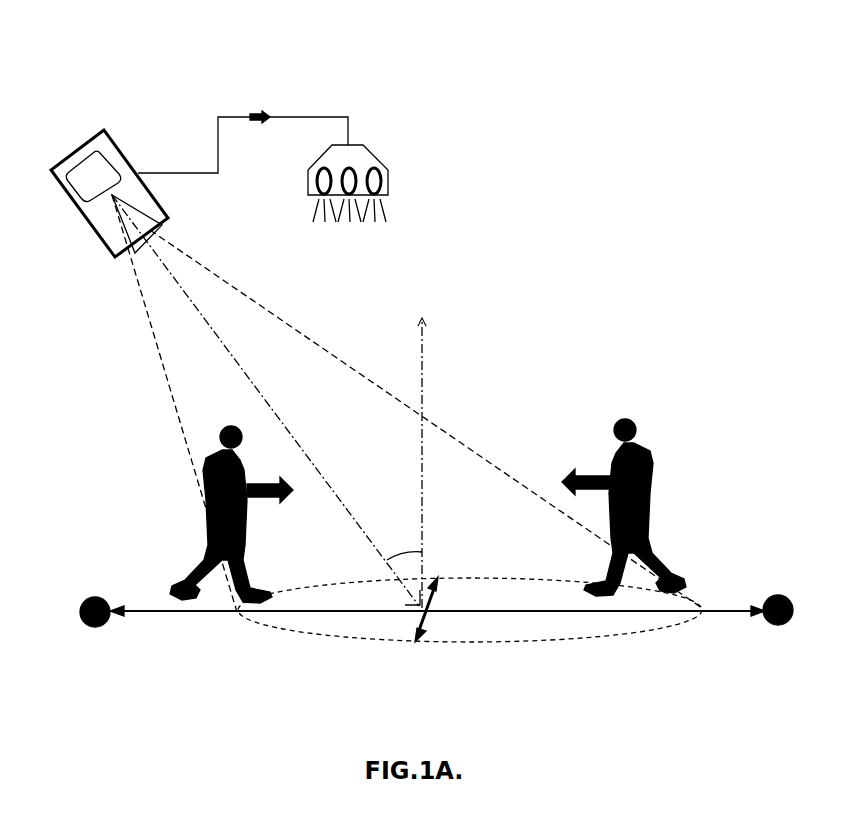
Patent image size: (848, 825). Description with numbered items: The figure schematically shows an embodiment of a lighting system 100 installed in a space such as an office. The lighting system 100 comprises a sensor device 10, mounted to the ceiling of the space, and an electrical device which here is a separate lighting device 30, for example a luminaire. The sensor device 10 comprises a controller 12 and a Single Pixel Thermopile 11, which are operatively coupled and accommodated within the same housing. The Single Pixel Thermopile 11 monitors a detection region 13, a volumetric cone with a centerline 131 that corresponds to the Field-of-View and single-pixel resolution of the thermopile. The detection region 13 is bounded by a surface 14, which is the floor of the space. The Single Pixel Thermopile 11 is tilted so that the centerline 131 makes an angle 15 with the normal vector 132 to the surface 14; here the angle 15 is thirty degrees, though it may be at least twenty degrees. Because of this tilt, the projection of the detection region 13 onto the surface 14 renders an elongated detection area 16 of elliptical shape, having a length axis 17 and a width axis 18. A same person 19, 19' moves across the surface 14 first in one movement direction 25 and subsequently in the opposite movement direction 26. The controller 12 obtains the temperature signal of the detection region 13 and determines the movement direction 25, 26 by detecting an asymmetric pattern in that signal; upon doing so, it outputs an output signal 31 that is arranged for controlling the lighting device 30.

The lighting system 100 is at (617, 83).
The sensor device 10 is at (117, 140).
The controller 12 is at (78, 173).
The Single Pixel Thermopile 11 is at (128, 253).
The output signal 31 is at (265, 114).
The lighting device 30 is at (382, 160).
The detection region 13 is at (170, 375).
The angle 15 is at (395, 545).
The centerline 131 is at (304, 440).
The normal vector 132 is at (422, 400).
The person 19 is at (212, 514).
The movement direction 25 is at (263, 485).
The person 19' is at (647, 507).
The movement direction 26 is at (575, 475).
The surface 14 is at (465, 605).
The length axis 17 is at (735, 603).
The elongated detection area 16 is at (650, 638).
The width axis 18 is at (413, 623).